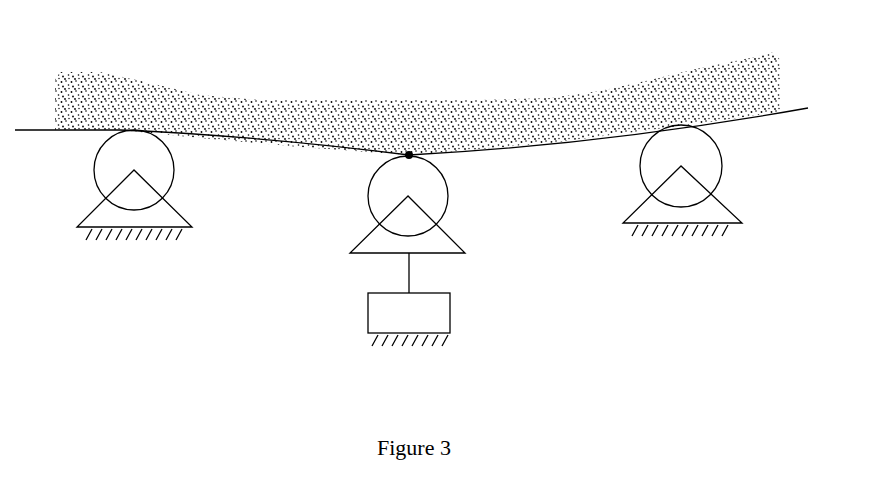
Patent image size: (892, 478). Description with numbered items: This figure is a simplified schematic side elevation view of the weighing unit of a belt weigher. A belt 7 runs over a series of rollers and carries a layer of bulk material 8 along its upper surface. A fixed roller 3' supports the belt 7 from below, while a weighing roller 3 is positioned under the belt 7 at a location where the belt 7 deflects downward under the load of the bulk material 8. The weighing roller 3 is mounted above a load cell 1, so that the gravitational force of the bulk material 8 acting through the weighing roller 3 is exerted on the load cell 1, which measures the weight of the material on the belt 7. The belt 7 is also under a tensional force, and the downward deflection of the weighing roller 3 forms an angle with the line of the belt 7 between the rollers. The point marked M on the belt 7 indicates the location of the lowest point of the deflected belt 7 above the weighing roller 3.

The load cell 1 is at (432, 321).
The weighing roller 3 is at (551, 272).
The fixed roller 3' is at (200, 261).
The belt 7 is at (411, 77).
The bulk material 8 is at (417, 77).
The measurement point M is at (405, 158).